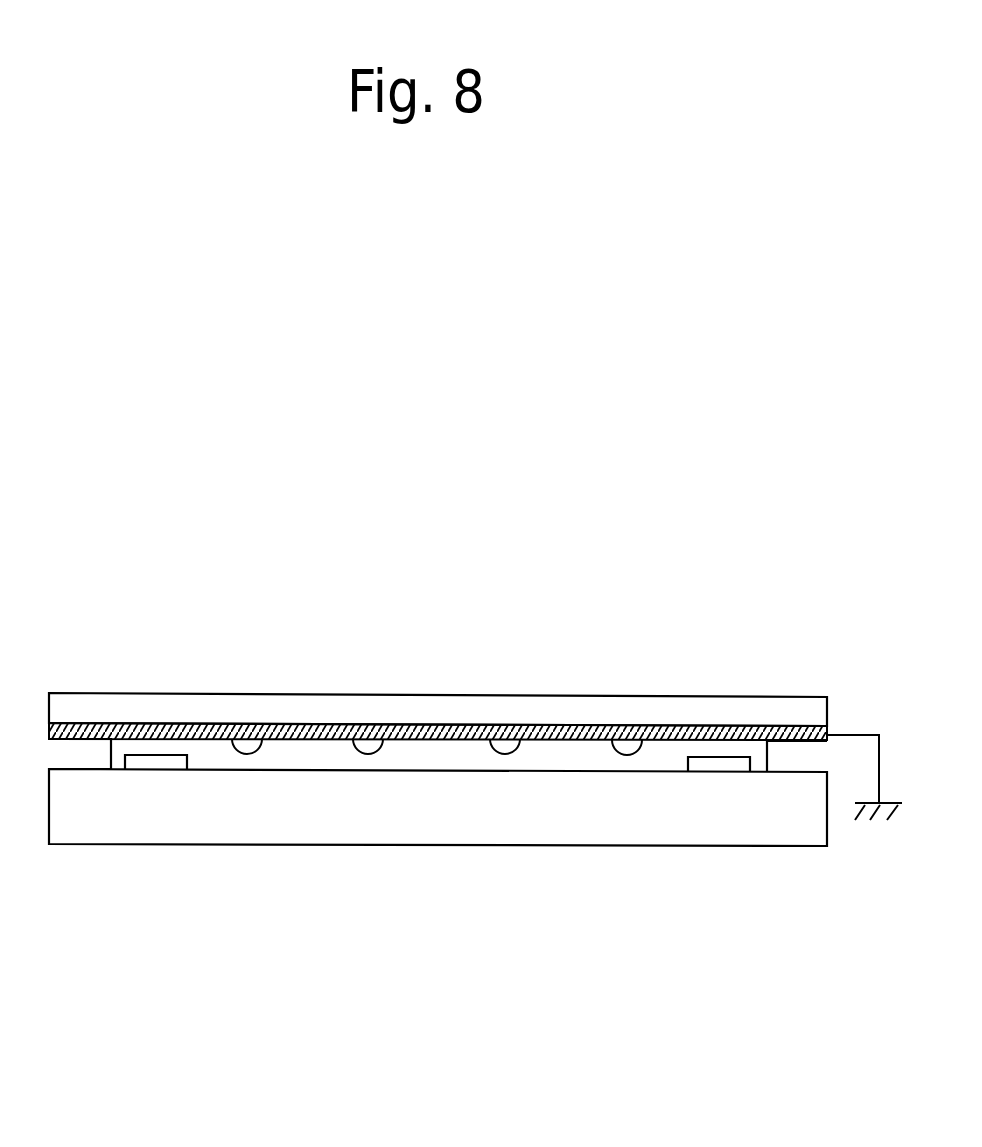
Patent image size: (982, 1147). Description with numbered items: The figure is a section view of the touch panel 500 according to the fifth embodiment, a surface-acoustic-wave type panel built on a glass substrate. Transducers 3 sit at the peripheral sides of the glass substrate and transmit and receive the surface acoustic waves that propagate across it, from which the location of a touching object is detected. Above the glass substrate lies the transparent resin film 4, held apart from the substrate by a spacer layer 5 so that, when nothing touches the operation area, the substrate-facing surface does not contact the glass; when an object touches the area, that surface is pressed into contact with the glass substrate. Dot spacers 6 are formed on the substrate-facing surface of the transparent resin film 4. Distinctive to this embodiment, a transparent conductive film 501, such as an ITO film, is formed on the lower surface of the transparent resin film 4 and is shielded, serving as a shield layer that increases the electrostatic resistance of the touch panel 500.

The touch panel 500 is at (448, 557).
The transparent resin film 4 is at (582, 695).
The transparent conductive film 501 is at (203, 724).
The spacer layer 5 is at (79, 753).
The transducers 3 is at (155, 761).
The dot spacers 6 is at (630, 755).